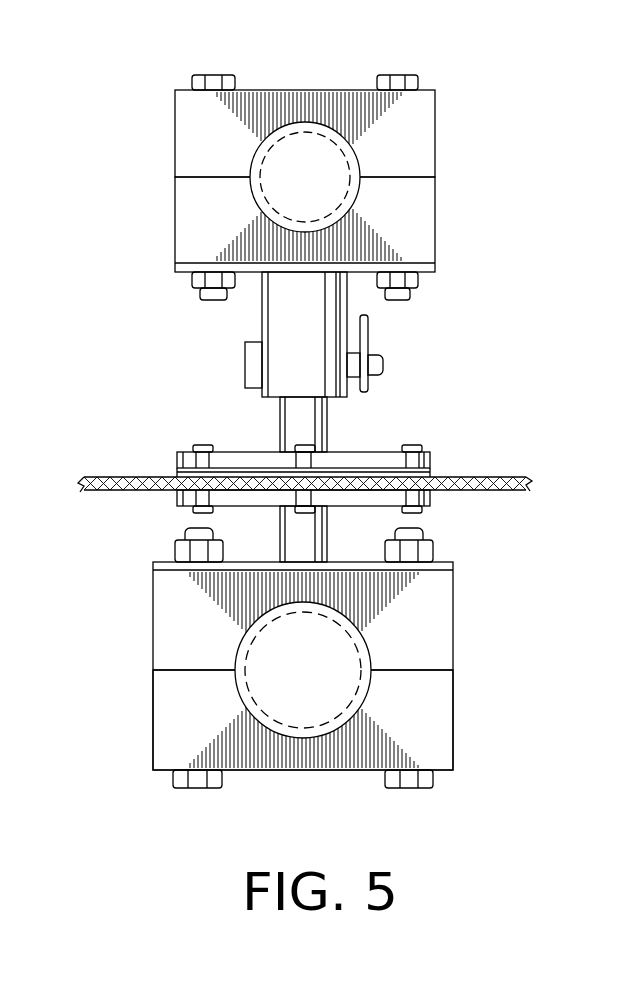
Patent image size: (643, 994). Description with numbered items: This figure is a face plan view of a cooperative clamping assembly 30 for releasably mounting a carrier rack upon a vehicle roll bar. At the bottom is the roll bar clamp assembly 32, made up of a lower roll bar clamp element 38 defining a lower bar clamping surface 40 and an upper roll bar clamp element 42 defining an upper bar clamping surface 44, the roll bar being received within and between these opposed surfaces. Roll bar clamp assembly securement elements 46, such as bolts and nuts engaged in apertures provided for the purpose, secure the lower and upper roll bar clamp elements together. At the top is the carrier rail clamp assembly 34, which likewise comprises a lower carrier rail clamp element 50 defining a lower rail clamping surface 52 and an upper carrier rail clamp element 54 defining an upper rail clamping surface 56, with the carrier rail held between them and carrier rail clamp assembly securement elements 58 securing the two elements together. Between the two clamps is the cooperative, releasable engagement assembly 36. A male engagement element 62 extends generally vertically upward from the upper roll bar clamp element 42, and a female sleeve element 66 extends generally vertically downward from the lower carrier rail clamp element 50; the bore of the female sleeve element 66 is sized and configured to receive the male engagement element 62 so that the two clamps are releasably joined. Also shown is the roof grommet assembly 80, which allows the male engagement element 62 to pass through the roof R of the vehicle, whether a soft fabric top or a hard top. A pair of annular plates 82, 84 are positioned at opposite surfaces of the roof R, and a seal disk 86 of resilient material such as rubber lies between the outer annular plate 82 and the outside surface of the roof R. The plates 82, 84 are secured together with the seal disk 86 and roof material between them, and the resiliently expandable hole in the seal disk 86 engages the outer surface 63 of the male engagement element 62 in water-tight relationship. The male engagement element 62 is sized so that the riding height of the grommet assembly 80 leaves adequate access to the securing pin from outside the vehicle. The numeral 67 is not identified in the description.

The cooperative clamping assembly 30 is at (501, 633).
The roll bar clamp assembly 32 is at (281, 793).
The carrier rail clamp assembly 34 is at (482, 99).
The cooperative, releasable engagement assembly 36 is at (159, 356).
The lower roll bar clamp element 38 is at (440, 710).
The lower bar clamping surface 40 is at (247, 700).
The upper roll bar clamp element 42 is at (440, 605).
The upper bar clamping surface 44 is at (362, 637).
The roll bar clamp assembly securement elements 46 is at (198, 790).
The lower carrier rail clamp element 50 is at (417, 218).
The lower rail clamping surface 52 is at (257, 202).
The upper carrier rail clamp element 54 is at (197, 133).
The upper rail clamping surface 56 is at (345, 147).
The carrier rail clamp assembly securement elements 58 is at (213, 73).
The male engagement element 62 is at (295, 533).
The outer surface 63 is at (313, 422).
The female sleeve element 66 is at (312, 380).
The sleeve 67 is at (278, 317).
The roof grommet assembly 80 is at (141, 456).
The outer annular plate 82 is at (232, 458).
The annular plate 84 is at (425, 497).
The seal disk 86 is at (425, 473).
The roof R is at (128, 485).